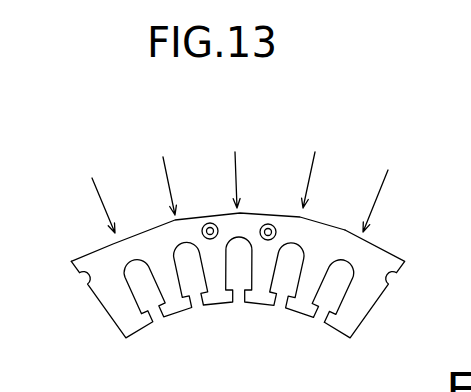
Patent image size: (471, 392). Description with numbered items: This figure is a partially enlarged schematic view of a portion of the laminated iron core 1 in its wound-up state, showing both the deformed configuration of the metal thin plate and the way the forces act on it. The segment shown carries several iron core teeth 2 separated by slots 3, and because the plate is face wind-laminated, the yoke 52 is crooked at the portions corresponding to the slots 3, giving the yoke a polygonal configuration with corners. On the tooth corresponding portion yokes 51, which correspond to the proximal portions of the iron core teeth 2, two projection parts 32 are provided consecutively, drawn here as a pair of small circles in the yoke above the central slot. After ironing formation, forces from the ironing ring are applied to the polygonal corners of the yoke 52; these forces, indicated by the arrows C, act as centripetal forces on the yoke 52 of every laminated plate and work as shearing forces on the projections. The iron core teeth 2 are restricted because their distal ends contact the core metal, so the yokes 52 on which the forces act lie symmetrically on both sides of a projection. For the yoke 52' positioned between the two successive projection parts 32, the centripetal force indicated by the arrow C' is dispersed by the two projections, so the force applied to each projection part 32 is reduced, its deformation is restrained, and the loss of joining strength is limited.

The laminated stator core segment 1 is at (90, 253).
The iron core tooth 2 is at (360, 305).
The slot 3 is at (334, 297).
The projection part 32 is at (209, 222).
The tooth corresponding portion yoke 51 is at (148, 247).
The yoke 52 is at (185, 310).
The yoke 52' is at (259, 158).
The arrow C is at (144, 153).
The arrow C' is at (291, 149).